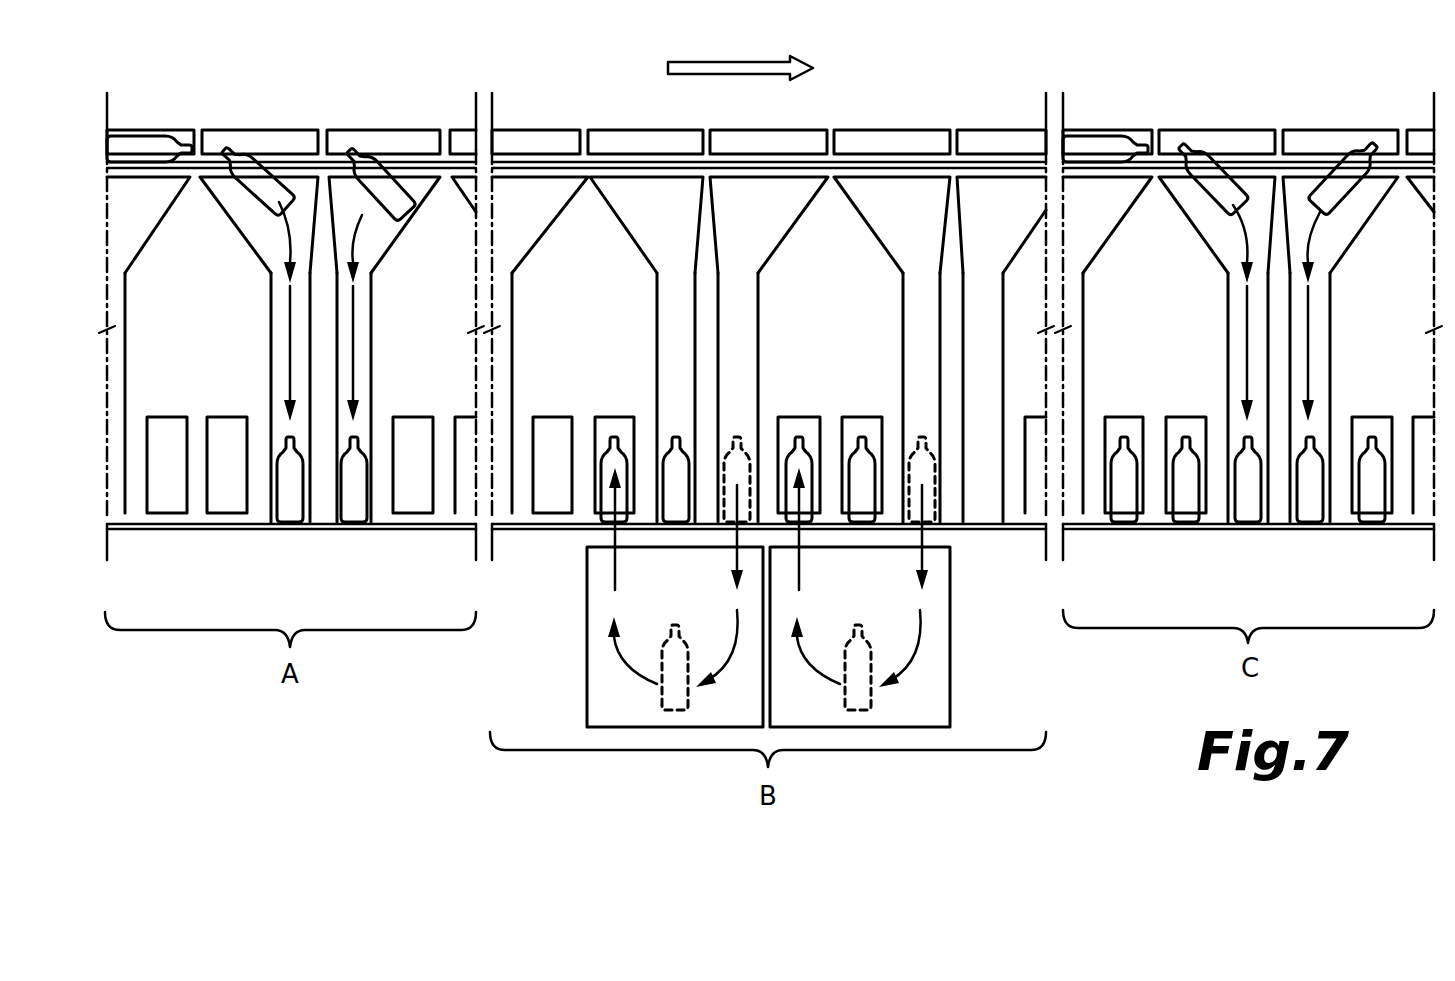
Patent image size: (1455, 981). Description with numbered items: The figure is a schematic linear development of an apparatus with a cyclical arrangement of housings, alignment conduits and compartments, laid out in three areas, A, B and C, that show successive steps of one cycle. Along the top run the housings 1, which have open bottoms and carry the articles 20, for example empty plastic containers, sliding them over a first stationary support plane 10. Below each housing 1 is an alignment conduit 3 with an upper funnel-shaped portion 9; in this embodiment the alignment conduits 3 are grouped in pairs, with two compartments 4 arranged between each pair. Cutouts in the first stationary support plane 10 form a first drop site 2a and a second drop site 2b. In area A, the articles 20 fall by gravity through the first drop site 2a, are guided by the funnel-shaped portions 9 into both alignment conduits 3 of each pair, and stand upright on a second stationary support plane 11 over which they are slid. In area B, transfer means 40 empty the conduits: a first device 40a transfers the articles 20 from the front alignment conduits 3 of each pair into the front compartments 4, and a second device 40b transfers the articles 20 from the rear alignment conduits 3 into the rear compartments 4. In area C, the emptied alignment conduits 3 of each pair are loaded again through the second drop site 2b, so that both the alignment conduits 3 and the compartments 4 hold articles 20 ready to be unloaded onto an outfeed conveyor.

The housing 1 is at (352, 137).
The first drop site 2a is at (296, 165).
The second drop site 2b is at (1246, 165).
The alignment conduit 3 is at (124, 305).
The compartment 4 is at (165, 417).
The funnel-shaped portion 9 is at (233, 210).
The first stationary support plane 10 is at (459, 152).
The second stationary support plane 11 is at (228, 530).
The article 20 is at (130, 143).
The transfer means 40 is at (758, 637).
The first device 40a is at (594, 586).
The second device 40b is at (940, 693).